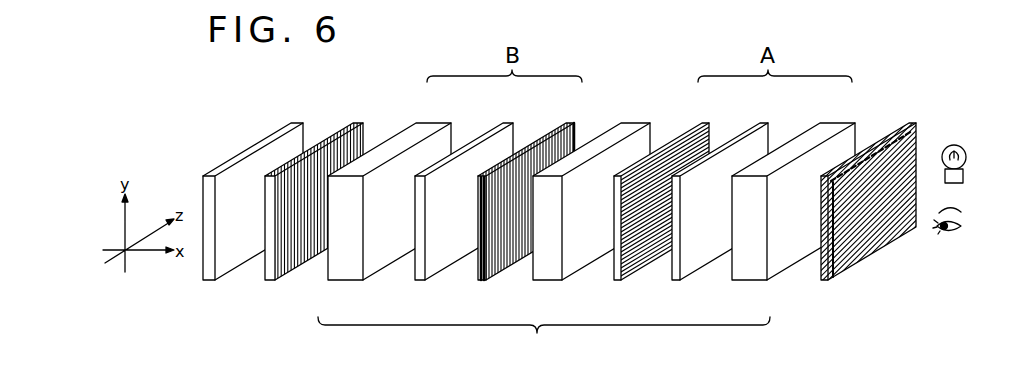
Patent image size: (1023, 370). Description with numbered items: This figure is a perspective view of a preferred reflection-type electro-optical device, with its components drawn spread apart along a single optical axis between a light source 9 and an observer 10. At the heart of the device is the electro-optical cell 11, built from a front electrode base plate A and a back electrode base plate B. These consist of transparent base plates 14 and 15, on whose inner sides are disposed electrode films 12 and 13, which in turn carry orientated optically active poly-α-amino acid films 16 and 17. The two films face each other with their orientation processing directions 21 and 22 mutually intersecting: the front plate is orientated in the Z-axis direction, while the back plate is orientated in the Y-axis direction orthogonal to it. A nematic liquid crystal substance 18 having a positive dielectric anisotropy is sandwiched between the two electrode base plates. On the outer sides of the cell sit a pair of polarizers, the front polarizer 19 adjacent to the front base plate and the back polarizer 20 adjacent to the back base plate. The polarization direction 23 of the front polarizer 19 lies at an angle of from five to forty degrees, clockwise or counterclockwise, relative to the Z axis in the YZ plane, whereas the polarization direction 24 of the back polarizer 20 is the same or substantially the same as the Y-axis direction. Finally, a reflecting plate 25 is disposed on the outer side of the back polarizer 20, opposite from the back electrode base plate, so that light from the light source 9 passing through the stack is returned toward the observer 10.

The light source 9 is at (954, 145).
The observer 10 is at (952, 233).
The electro-optical cell 11 is at (597, 181).
The electrode film 12 is at (763, 130).
The electrode film 13 is at (508, 122).
The transparent base plate 14 is at (833, 130).
The transparent base plate 15 is at (432, 130).
The orientated optically active poly-α-amino acid film 16 is at (704, 128).
The orientated optically active poly-α-amino acid film 17 is at (566, 128).
The nematic liquid crystal substance 18 is at (635, 130).
The front polarizer 19 is at (912, 126).
The back polarizer 20 is at (360, 122).
The orientation processing direction 21 is at (647, 250).
The orientation processing direction 22 is at (510, 252).
The polarization direction 23 is at (865, 248).
The polarization direction 24 is at (300, 257).
The reflecting plate 25 is at (296, 122).